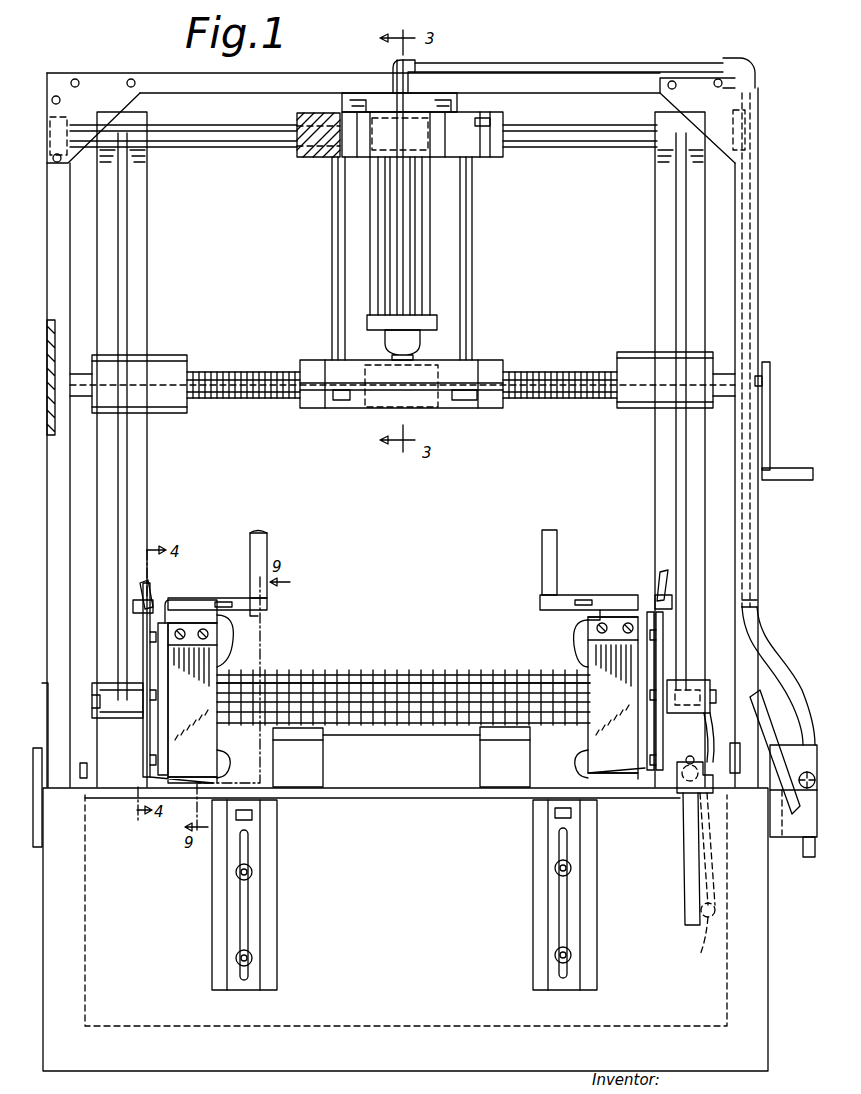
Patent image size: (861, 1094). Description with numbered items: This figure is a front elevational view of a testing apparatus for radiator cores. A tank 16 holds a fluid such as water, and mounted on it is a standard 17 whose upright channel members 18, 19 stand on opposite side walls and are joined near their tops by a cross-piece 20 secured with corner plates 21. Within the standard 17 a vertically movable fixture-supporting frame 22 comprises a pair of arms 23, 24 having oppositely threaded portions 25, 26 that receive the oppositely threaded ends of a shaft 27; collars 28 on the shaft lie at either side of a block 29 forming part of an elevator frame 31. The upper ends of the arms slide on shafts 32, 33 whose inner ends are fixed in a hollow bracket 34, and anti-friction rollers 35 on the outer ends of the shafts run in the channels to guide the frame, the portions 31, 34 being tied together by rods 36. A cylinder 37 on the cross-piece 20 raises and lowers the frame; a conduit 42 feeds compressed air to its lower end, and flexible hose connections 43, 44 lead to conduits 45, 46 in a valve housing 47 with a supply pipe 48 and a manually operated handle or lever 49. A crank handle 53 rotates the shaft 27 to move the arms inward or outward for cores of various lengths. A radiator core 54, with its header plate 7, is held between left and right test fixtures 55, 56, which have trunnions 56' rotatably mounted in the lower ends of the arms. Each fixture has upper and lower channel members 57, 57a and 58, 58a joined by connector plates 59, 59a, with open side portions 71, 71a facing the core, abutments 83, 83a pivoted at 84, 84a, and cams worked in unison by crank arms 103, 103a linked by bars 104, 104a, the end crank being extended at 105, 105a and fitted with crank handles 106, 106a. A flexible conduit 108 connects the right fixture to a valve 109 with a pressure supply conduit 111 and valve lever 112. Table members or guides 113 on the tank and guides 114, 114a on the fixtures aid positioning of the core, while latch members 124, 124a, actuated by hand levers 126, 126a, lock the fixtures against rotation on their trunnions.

The workpiece 7 is at (358, 675).
The tank 16 is at (322, 1071).
The standard 17 is at (164, 56).
The channel member 18 is at (64, 265).
The channel member 19 is at (760, 295).
The cross-piece 20 is at (318, 73).
The corner plates 21 is at (85, 68).
The fixture-supporting frame 22 is at (291, 354).
The arm 23 is at (150, 298).
The arm 24 is at (655, 278).
The threaded portion 25 is at (180, 413).
The threaded portion 26 is at (628, 408).
The shaft 27 is at (266, 398).
The collars 28 is at (365, 410).
The block 29 is at (425, 352).
The elevator frame 31 is at (495, 404).
The shaft 32 is at (222, 140).
The shaft 33 is at (563, 140).
The hollow bracket 34 is at (305, 158).
The anti-friction rollers 35 is at (55, 105).
The rods 36 is at (332, 255).
The cylinder 37 is at (425, 210).
The conduit 42 is at (573, 63).
The flexible hose connection 43 is at (777, 650).
The flexible hose connection 44 is at (760, 630).
The conduit 45 is at (790, 830).
The conduit 46 is at (790, 745).
The valve housing 47 is at (770, 815).
The supply pipe 48 is at (808, 858).
The handle or lever 49 is at (770, 697).
The crank handle 53 is at (775, 450).
The radiator core 54 is at (440, 675).
The test fixture 55 is at (237, 584).
The test fixture 56 is at (368, 628).
The trunnions 56' is at (408, 706).
The upper channel member 57 is at (143, 648).
The upper channel member 57a is at (650, 640).
The lower channel member 58 is at (168, 766).
The lower channel member 58a is at (648, 775).
The connector plate 59 is at (158, 665).
The connector plate 59a is at (658, 670).
The open side portion 71 is at (225, 665).
The open side portion 71a is at (580, 665).
The abutment 83 is at (190, 773).
The abutment 83a is at (632, 773).
The pivotal mounting 84 is at (188, 602).
The pivotal mounting 84a is at (612, 612).
The crank arms 103 is at (210, 598).
The crank arms 103a is at (562, 595).
The bar 104 is at (258, 616).
The bar 104a is at (570, 608).
The extension 105 is at (232, 605).
The extension 105a is at (575, 603).
The crank handle 106 is at (258, 533).
The crank handle 106a is at (542, 535).
The flexible conduit 108 is at (700, 955).
The valve 109 is at (683, 815).
The pressure supply conduit 111 is at (685, 908).
The valve lever 112 is at (690, 757).
The table members or guides 113 is at (328, 735).
The guide or supporting member 114 is at (258, 740).
The guide or supporting member 114a is at (525, 735).
The latch member 124 is at (133, 606).
The latch member 124a is at (670, 595).
The hand lever 126 is at (140, 598).
The hand lever 126a is at (660, 572).